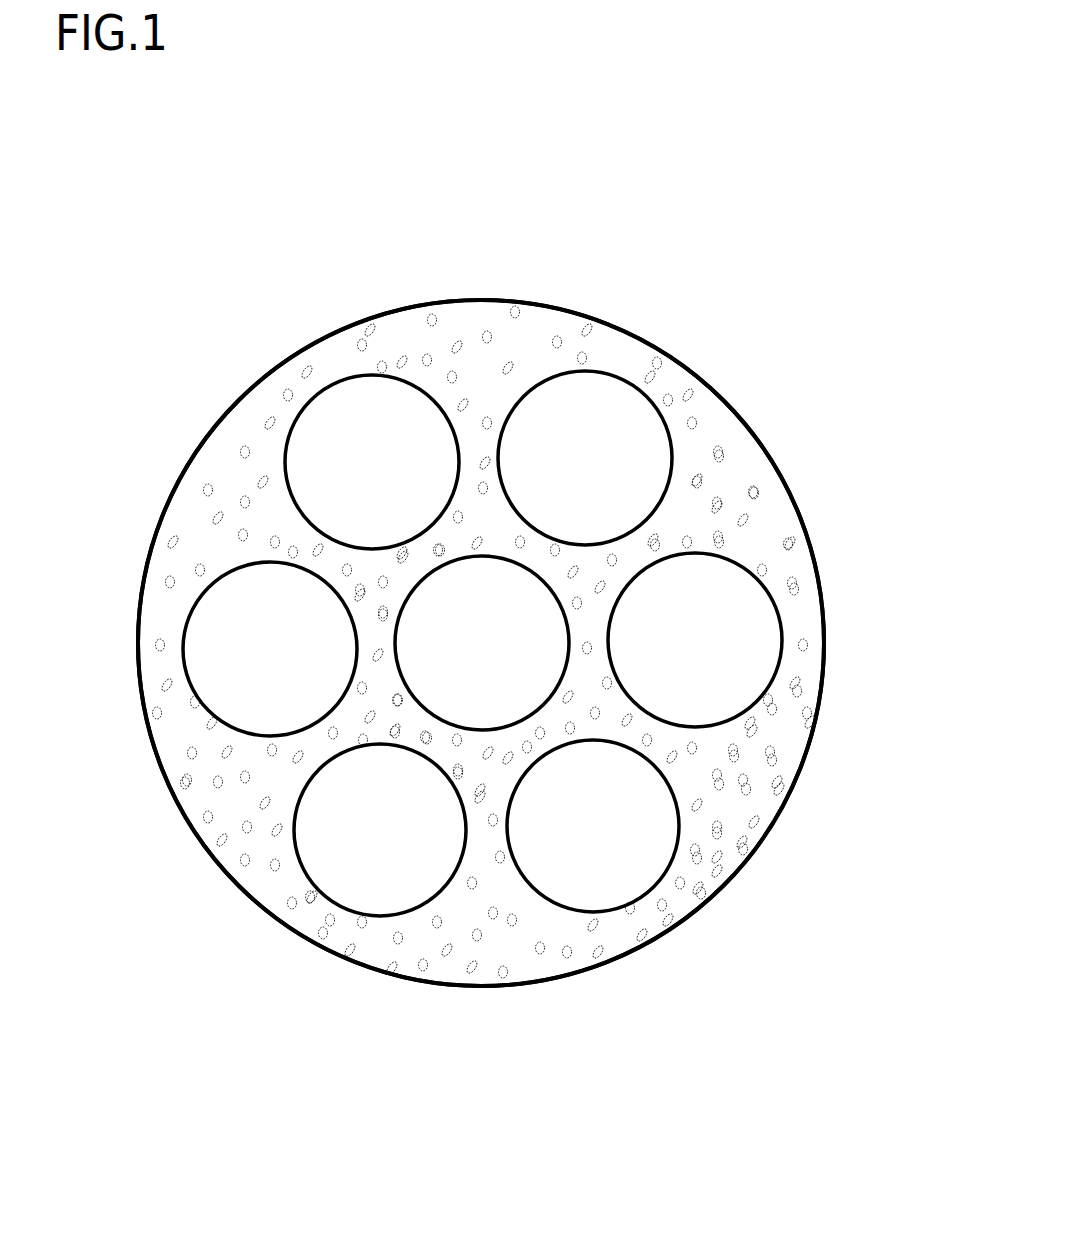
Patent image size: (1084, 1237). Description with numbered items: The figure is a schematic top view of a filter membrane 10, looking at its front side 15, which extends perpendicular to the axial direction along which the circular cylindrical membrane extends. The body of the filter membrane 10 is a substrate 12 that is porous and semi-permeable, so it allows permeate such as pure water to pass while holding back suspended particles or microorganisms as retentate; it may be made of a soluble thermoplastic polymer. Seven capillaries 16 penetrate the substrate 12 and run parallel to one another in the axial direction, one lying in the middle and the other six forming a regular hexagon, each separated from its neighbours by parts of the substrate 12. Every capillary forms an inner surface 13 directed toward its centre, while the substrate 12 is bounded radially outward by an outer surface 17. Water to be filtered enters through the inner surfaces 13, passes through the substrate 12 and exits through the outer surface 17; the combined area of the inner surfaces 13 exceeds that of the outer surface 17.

The filter membrane 10 is at (170, 324).
The substrate 12 is at (734, 512).
The inner surface 13 is at (340, 378).
The front side 15 is at (244, 794).
The capillaries 16 is at (388, 476).
The outer surface 17 is at (672, 930).